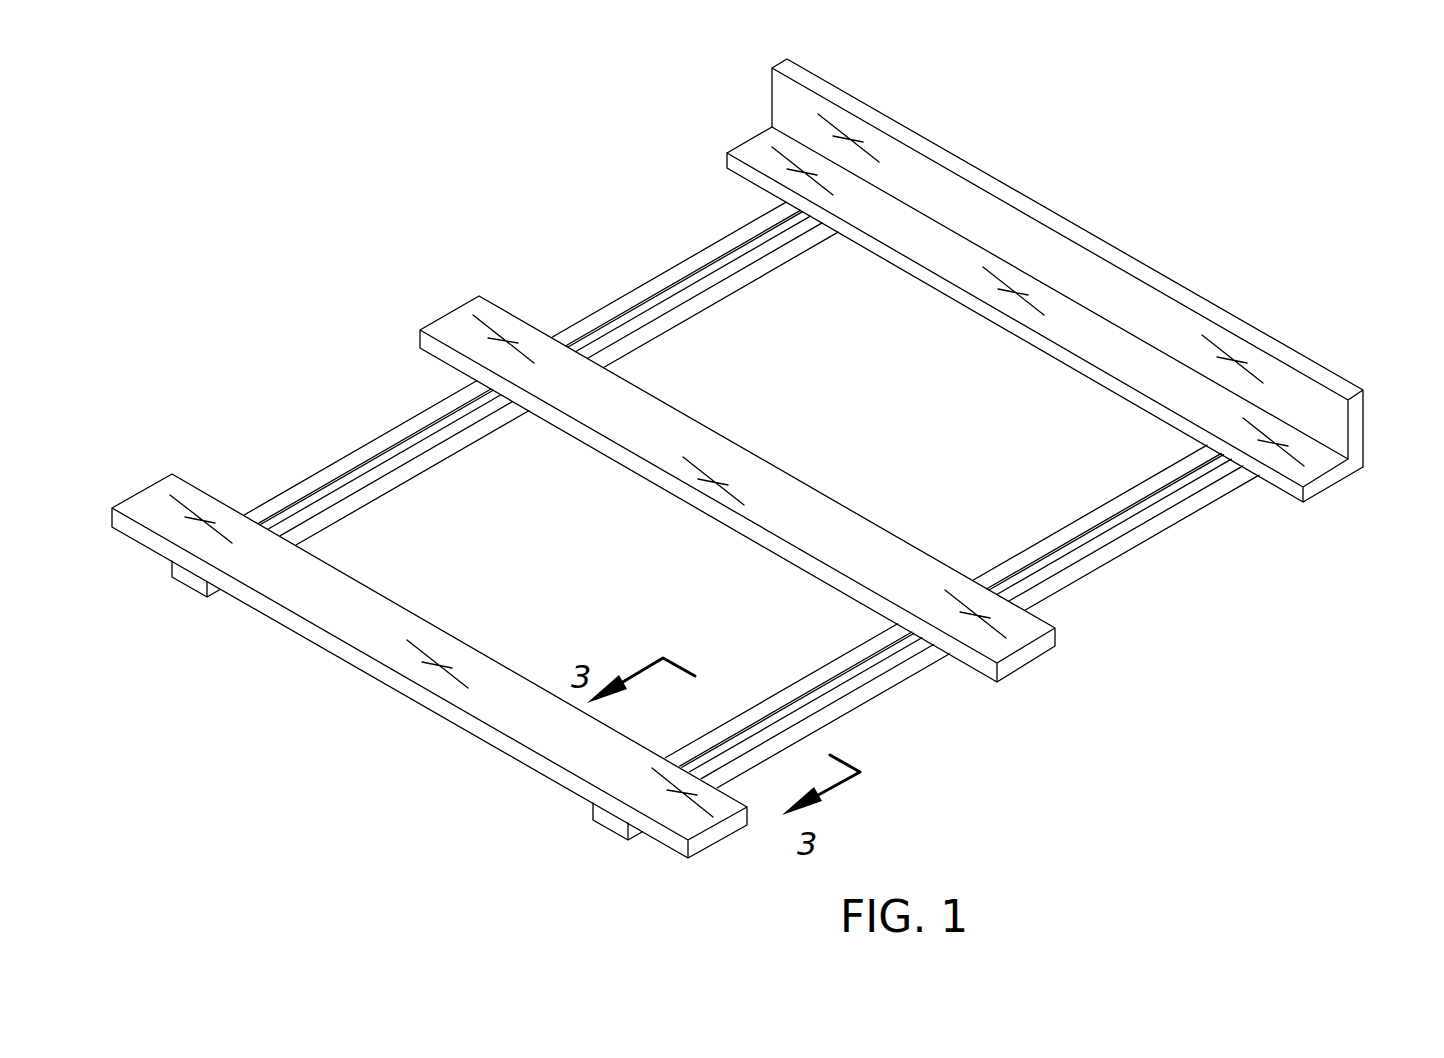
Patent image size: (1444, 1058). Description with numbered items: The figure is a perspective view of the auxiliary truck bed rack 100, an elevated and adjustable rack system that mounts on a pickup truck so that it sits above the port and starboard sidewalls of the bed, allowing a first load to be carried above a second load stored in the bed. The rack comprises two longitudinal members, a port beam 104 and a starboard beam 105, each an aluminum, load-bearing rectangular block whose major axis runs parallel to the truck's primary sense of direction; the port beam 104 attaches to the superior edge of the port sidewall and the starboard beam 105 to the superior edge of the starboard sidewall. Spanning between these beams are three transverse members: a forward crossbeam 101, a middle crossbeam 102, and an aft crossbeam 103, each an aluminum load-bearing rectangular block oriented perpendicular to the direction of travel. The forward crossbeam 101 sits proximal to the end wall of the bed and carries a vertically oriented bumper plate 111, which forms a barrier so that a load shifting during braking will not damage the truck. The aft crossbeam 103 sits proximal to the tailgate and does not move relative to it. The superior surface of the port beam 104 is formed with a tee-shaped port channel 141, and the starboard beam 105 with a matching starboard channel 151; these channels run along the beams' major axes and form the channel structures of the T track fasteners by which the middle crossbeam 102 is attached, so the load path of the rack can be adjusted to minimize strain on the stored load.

The auxiliary truck bed rack 100 is at (302, 152).
The forward crossbeam 101 is at (1078, 256).
The middle crossbeam 102 is at (1035, 658).
The aft crossbeam 103 is at (723, 838).
The port beam 104 is at (505, 386).
The starboard beam 105 is at (938, 641).
The bumper plate 111 is at (797, 110).
The port channel 141 is at (678, 290).
The starboard channel 151 is at (1100, 548).